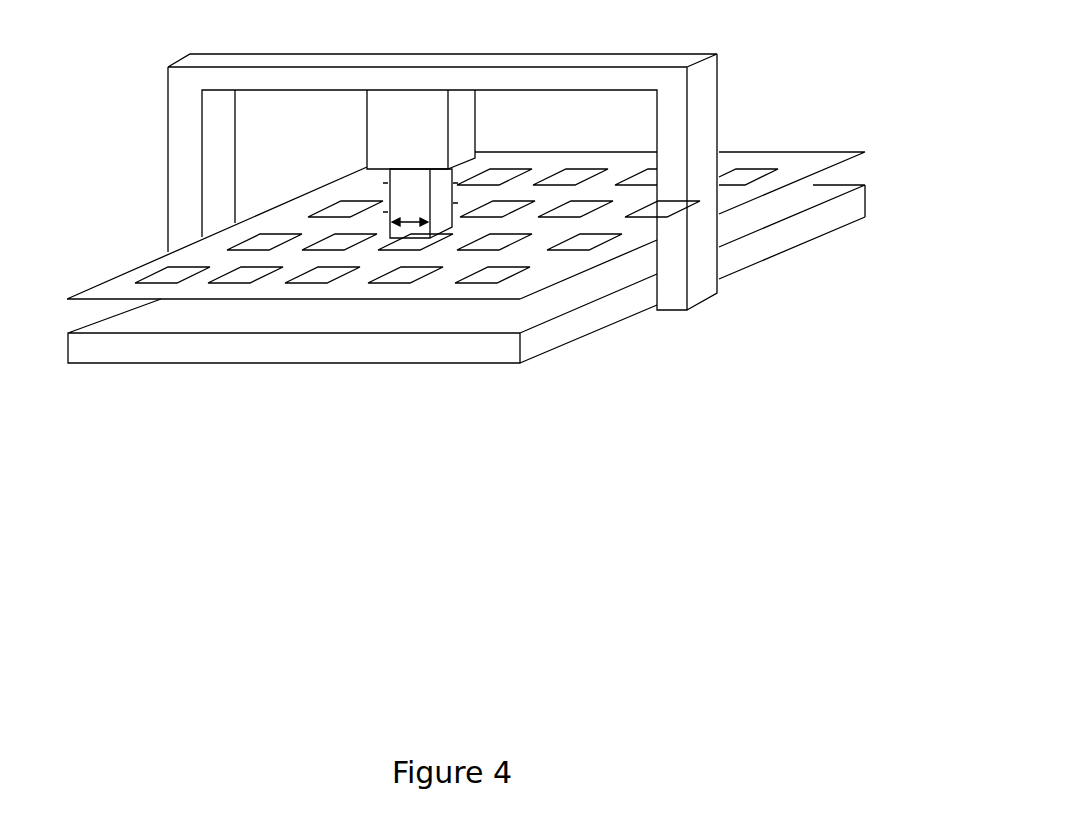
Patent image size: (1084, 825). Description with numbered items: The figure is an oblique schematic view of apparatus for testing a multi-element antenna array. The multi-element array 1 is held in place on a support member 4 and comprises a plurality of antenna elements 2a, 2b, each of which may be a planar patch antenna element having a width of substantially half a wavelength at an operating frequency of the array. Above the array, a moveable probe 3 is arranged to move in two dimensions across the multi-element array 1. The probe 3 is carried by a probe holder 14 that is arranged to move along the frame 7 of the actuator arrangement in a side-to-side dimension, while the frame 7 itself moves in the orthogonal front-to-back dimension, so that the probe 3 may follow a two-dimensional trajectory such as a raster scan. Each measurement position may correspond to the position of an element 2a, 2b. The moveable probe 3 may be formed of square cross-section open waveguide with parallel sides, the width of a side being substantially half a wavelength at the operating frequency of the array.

The multi-element array 1 is at (843, 160).
The antenna element 2a is at (170, 278).
The antenna element 2b is at (240, 280).
The moveable probe 3 is at (393, 202).
The support member 4 is at (865, 208).
The frame 7 is at (722, 95).
The probe holder 14 is at (408, 102).